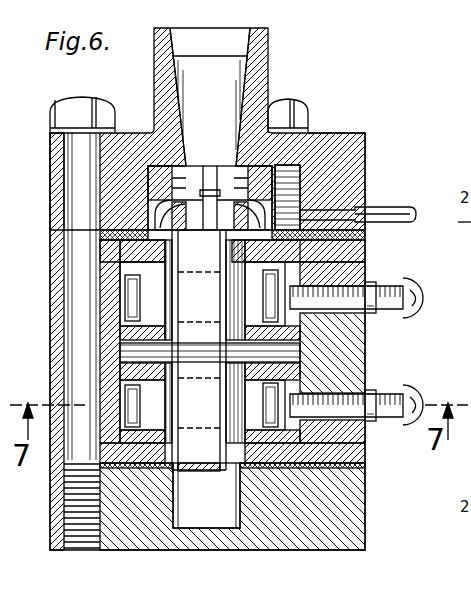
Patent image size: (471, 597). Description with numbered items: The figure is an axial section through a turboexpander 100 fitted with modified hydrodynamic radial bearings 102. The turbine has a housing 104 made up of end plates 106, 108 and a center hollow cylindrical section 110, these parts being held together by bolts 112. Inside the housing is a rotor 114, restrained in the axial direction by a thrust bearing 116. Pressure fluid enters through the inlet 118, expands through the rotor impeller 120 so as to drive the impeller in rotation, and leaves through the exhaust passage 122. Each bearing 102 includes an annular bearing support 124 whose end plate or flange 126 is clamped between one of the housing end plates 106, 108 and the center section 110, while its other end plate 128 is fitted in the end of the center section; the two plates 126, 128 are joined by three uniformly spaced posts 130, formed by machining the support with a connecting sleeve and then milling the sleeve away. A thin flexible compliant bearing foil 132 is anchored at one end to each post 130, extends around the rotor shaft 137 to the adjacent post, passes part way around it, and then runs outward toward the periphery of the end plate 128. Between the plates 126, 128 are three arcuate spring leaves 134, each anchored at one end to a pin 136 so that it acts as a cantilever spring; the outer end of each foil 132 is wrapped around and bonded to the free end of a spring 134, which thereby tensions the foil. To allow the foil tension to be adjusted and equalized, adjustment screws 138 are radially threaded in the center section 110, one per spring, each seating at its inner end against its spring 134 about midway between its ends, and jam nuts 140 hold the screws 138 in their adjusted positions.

The turboexpander 100 is at (362, 121).
The hydrodynamic radial bearings 102 is at (302, 272).
The housing 104 is at (366, 172).
The end plate 106 is at (355, 516).
The end plate 108 is at (365, 134).
The center hollow cylindrical section 110 is at (348, 360).
The bolts 112 is at (70, 108).
The rotor 114 is at (196, 490).
The thrust bearing 116 is at (126, 352).
The inlet 118 is at (396, 208).
The rotor impeller 120 is at (202, 200).
The exhaust passage 122 is at (252, 70).
The annular bearing supports 124 is at (364, 254).
The end plates or flanges 126 is at (362, 236).
The end plates 128 is at (125, 336).
The posts 130 is at (176, 264).
The bearing strip or foil 132 is at (140, 283).
The spring leaves 134 is at (245, 296).
The pins 136 is at (150, 285).
The rotor shaft 137 is at (208, 490).
The adjustment screws 138 is at (424, 296).
The jam nuts 140 is at (375, 310).